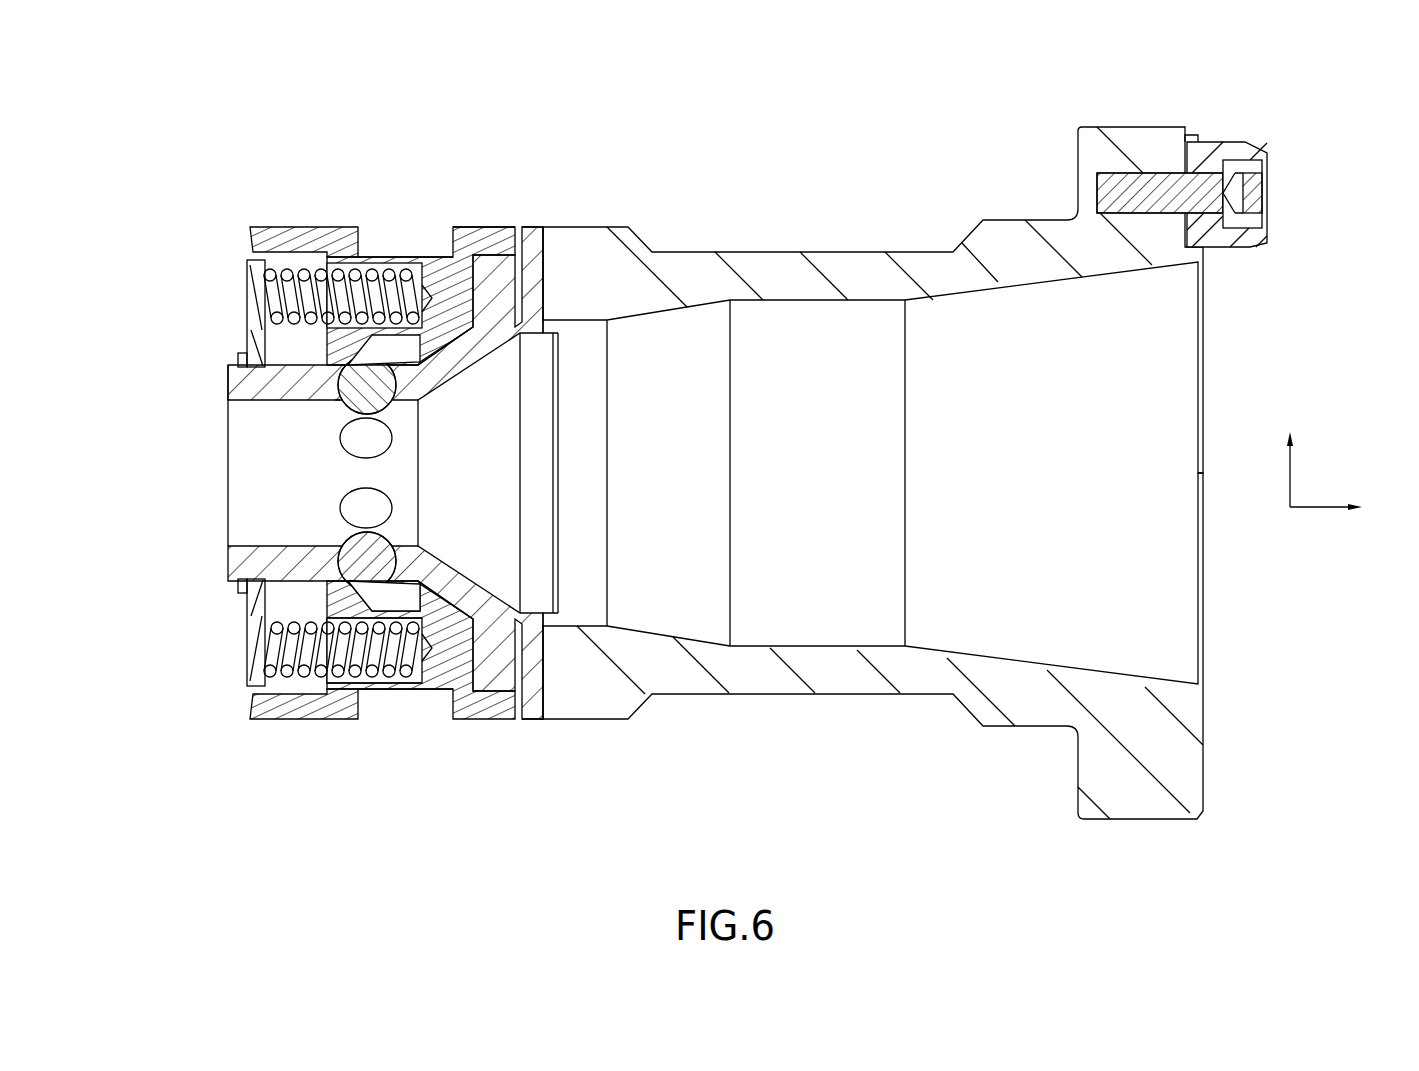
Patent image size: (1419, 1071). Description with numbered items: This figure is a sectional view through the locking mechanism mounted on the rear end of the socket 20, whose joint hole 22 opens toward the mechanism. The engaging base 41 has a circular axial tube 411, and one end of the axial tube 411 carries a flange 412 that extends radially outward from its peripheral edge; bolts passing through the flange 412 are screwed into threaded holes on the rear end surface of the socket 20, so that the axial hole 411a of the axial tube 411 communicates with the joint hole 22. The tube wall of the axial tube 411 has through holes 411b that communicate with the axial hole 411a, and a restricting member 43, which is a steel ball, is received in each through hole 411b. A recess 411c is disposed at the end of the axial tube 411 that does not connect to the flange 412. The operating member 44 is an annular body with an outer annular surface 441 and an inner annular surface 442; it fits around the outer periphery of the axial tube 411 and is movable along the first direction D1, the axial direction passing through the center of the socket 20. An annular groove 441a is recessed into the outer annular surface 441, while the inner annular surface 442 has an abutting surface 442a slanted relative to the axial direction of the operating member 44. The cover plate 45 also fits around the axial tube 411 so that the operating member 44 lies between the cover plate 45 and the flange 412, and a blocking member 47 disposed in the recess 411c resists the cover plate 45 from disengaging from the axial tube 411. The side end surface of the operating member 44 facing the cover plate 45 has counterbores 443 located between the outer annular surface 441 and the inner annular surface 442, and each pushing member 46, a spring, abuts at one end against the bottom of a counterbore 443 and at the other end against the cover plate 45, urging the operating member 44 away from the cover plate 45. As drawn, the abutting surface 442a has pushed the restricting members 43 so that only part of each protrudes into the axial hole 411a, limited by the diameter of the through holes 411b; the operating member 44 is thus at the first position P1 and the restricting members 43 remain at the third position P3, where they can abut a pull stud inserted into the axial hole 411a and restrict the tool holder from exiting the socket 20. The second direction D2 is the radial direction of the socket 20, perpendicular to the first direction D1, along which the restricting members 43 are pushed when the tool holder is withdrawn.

The socket 20 is at (781, 248).
The joint hole 22 is at (1062, 489).
The engaging base 41 is at (345, 502).
The axial tube 411 is at (237, 567).
The axial hole 411a is at (322, 494).
The through hole 411b is at (400, 567).
The recess 411c is at (230, 372).
The flange 412 is at (533, 265).
The restricting member 43 is at (372, 577).
The operating member 44 is at (361, 471).
The outer annular surface 441 is at (323, 227).
The annular groove 441a is at (370, 250).
The inner annular surface 442 is at (421, 396).
The abutting surface 442a is at (393, 350).
The counterbore 443 is at (368, 680).
The cover plate 45 is at (253, 660).
The pushing member 46 is at (293, 672).
The blocking member 47 is at (238, 357).
The first position P1 is at (507, 210).
The third position P3 is at (330, 409).
The first direction D1 is at (1347, 505).
The second direction D2 is at (1297, 454).